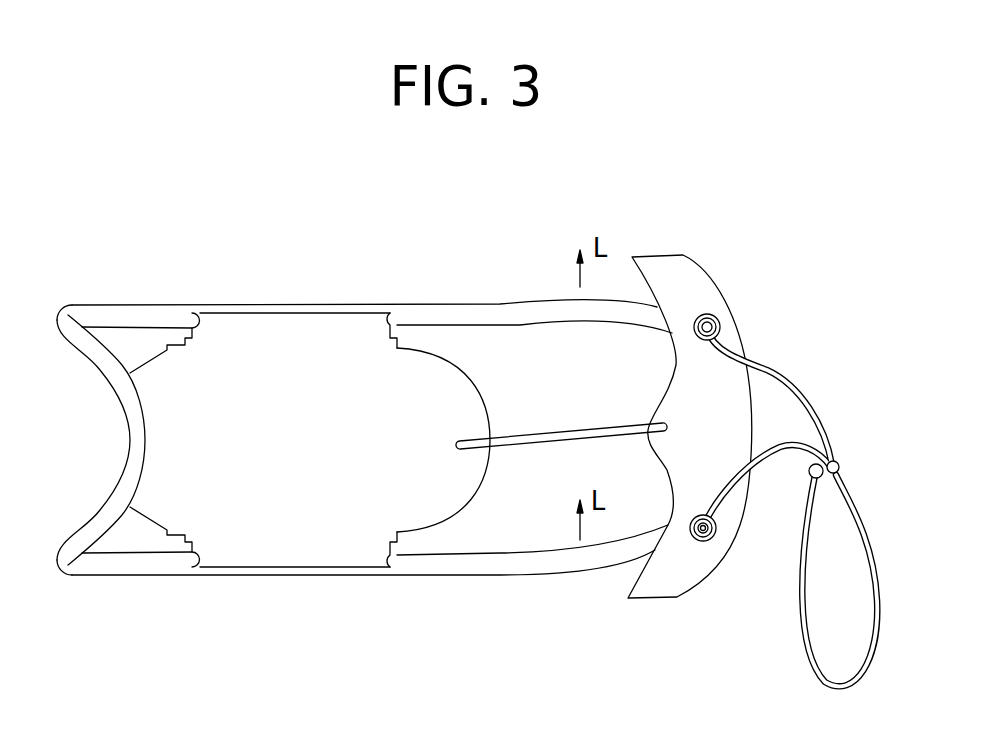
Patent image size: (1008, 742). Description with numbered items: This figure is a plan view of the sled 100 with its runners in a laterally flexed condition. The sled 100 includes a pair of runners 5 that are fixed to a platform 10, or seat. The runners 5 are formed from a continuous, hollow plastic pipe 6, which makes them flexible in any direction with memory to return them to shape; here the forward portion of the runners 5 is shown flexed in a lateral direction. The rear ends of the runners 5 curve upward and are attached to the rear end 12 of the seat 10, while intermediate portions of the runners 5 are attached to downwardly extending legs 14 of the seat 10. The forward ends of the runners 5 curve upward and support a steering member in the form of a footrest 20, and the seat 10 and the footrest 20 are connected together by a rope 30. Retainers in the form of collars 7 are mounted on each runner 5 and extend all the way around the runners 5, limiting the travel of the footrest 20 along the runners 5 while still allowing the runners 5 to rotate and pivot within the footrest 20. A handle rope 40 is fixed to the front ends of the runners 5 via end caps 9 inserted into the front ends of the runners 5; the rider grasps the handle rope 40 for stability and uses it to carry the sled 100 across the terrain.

The sled 100 is at (543, 237).
The runners 5 is at (166, 305).
The hollow plastic pipe 6 is at (95, 293).
The rear end 12 is at (140, 433).
The platform 10 is at (442, 348).
The legs 14 is at (380, 305).
The rope 30 is at (558, 428).
The footrest 20 is at (716, 283).
The handle rope 40 is at (827, 413).
The collars 7 is at (718, 326).
The end caps 9 is at (712, 538).